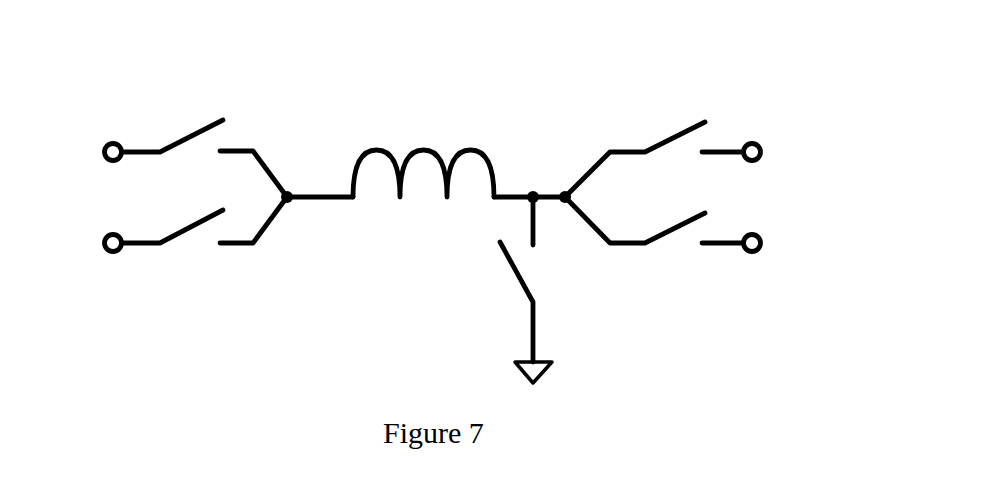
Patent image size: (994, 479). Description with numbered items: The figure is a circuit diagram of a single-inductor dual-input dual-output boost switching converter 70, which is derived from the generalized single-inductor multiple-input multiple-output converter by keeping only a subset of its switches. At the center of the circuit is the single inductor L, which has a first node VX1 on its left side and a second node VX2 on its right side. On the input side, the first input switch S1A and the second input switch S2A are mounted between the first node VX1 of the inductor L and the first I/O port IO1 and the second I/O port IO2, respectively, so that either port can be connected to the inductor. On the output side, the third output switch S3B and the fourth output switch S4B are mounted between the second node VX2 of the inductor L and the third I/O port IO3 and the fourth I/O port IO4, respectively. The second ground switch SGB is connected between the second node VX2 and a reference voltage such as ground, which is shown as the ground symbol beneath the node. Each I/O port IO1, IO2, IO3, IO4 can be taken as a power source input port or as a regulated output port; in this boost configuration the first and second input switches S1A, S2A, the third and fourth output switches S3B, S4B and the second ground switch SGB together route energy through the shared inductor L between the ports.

The single-inductor DIDO boost switching converter 70 is at (522, 90).
The first input switch S1A is at (186, 142).
The second input switch S2A is at (186, 215).
The third output switch S3B is at (672, 144).
The fourth output switch S4B is at (672, 217).
The second ground switch SGB is at (498, 312).
The inductor L is at (423, 151).
The first node of the inductor VX1 is at (317, 173).
The second node of the inductor VX2 is at (532, 197).
The first I/O port IO1 is at (115, 130).
The second I/O port IO2 is at (115, 221).
The third I/O port IO3 is at (741, 133).
The fourth I/O port IO4 is at (741, 223).